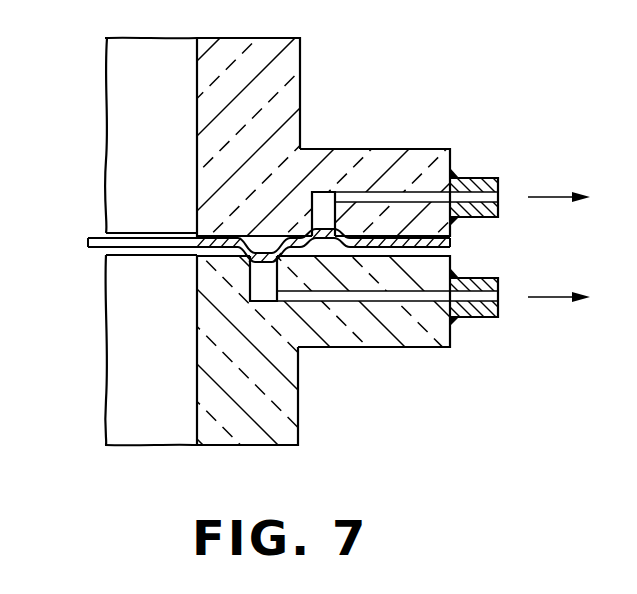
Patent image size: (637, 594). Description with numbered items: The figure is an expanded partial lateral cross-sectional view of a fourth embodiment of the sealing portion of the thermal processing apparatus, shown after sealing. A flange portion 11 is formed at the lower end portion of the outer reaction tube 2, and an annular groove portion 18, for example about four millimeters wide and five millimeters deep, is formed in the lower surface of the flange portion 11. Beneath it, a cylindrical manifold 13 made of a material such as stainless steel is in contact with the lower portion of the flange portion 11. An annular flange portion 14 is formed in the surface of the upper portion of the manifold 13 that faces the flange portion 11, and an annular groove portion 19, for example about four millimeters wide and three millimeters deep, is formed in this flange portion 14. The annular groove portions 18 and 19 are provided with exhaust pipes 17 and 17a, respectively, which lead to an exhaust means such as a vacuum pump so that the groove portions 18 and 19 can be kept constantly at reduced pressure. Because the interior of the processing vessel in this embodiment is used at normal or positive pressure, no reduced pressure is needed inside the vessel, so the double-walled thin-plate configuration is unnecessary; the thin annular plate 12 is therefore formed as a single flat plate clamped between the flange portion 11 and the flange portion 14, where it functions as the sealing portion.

The outer reaction tube 2 is at (300, 52).
The flange portion 11 is at (423, 149).
The thin annular plate 12 is at (92, 237).
The cylindrical manifold 13 is at (298, 418).
The annular flange portion 14 is at (384, 347).
The exhaust pipe 17 is at (490, 178).
The exhaust pipe 17a is at (480, 318).
The annular groove portion 18 is at (322, 198).
The annular groove portion 19 is at (257, 280).